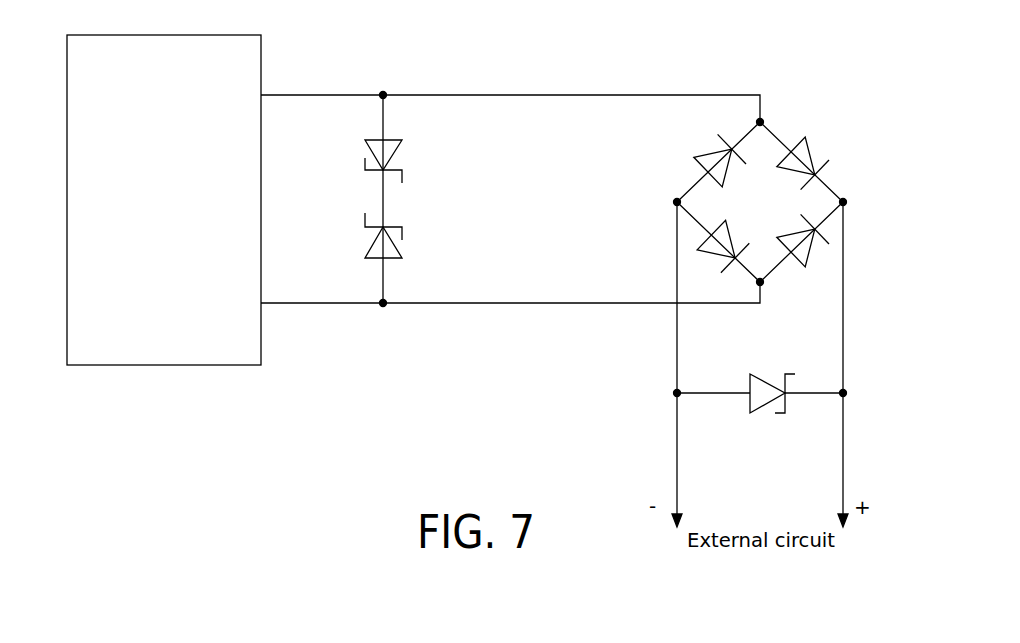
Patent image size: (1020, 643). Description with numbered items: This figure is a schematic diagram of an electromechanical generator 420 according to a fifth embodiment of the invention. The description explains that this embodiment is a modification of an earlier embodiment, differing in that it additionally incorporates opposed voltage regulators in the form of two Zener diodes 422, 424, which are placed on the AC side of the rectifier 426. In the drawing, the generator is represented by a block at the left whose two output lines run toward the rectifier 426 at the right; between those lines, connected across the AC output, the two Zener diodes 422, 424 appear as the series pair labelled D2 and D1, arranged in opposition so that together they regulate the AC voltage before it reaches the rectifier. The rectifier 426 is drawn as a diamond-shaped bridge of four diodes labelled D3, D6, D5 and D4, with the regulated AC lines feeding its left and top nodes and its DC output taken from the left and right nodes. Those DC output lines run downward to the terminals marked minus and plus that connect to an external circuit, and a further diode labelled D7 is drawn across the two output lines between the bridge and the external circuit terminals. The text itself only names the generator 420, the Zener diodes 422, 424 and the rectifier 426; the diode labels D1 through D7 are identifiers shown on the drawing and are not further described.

The electromechanical generator 420 is at (333, 350).
The Zener diode 422 is at (421, 152).
The Zener diode 424 is at (421, 246).
The rectifier 426 is at (760, 187).
The zener diode D1 is at (433, 270).
The zener diode D2 is at (433, 131).
The bridge diode D3 is at (715, 157).
The bridge diode D4 is at (808, 246).
The bridge diode D5 is at (717, 249).
The bridge diode D6 is at (808, 159).
The zener diode D7 is at (760, 381).